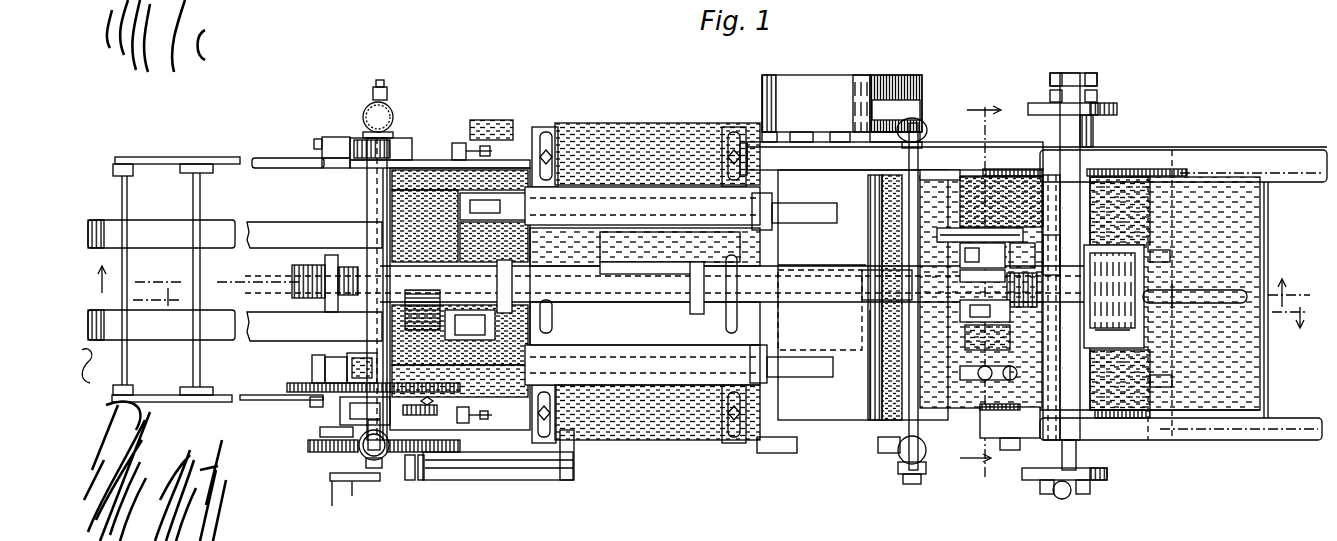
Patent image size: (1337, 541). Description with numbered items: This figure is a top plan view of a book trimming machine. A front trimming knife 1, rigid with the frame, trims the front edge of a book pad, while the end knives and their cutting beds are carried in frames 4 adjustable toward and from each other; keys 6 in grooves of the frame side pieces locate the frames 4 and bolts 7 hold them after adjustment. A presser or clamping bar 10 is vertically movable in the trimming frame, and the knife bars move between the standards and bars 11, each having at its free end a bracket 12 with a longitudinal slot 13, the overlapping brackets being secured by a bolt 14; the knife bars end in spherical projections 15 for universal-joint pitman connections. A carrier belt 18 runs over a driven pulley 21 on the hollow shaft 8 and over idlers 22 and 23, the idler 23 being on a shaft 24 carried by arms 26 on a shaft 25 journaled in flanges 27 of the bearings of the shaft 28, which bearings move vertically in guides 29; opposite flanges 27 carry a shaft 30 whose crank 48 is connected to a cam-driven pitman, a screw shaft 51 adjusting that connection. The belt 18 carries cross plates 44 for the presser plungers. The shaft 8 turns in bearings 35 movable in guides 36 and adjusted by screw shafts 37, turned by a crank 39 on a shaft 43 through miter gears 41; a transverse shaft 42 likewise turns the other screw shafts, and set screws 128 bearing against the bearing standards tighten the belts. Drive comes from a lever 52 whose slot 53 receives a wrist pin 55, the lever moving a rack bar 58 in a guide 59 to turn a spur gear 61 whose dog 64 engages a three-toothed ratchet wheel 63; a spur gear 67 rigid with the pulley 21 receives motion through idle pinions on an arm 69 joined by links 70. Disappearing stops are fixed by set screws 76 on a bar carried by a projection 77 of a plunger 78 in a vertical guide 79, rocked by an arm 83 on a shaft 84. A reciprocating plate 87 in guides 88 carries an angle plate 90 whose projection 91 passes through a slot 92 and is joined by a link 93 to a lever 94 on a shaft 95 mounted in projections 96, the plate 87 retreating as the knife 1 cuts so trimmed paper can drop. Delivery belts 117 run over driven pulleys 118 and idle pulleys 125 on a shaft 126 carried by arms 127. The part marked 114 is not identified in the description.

The trimming knife 1 is at (1070, 397).
The frames 4 is at (671, 190).
The keys 6 is at (724, 308).
The bolts 7 is at (735, 111).
The shaft 8 is at (367, 197).
The presser or clamping bar 10 is at (886, 82).
The bars 11 is at (922, 115).
The bracket 12 is at (640, 266).
The longitudinal slot 13 is at (545, 256).
The bolt 14 is at (645, 303).
The projections 15 is at (760, 194).
The belt 18 is at (863, 295).
The driven pulley 21 is at (651, 283).
The idler 22 is at (1028, 290).
The idler 23 is at (1058, 307).
The shaft 24 is at (1041, 244).
The shaft 25 is at (1001, 202).
The arms 26 is at (981, 224).
The flanges 27 is at (1005, 112).
The shaft 28 is at (820, 310).
The guides 29 is at (873, 160).
The shaft 30 is at (822, 256).
The bearings 35 is at (348, 166).
The guides 36 is at (398, 146).
The vertical screw shafts 37 is at (320, 144).
The crank 39 is at (355, 489).
The miter gears 41 is at (390, 108).
The shaft 42 is at (886, 453).
The shaft 43 is at (362, 114).
The cross plates 44 is at (630, 328).
The crank 48 is at (1000, 402).
The crank-operated screw shaft 51 is at (1010, 438).
The lever 52 is at (520, 470).
The longitudinal slot 53 is at (575, 472).
The wrist pin 55 is at (500, 462).
The rack bar 58 is at (460, 480).
The guide 59 is at (316, 453).
The spur gear 61 is at (421, 480).
The ratchet wheel 63 is at (407, 480).
The dog 64 is at (326, 428).
The spur gear 67 is at (298, 384).
The arm 69 is at (340, 357).
The links 70 is at (318, 355).
The set screw 76 is at (972, 268).
The projection 77 is at (975, 306).
The vertically reciprocating plunger 78 is at (986, 320).
The vertical guide 79 is at (983, 283).
The rocking arm 83 is at (885, 365).
The shaft 84 is at (870, 288).
The reciprocating plate 87 is at (1270, 238).
The guides 88 is at (1037, 177).
The angle plate 90 is at (1150, 257).
The projection 91 is at (1174, 286).
The longitudinal slot 92 is at (1222, 290).
The link 93 is at (1114, 296).
The lever 94 is at (1112, 340).
The shaft 95 is at (1172, 384).
The projections 96 is at (1181, 426).
The housing 114 is at (460, 299).
The belts 117 is at (235, 280).
The driven pulleys 118 is at (460, 328).
The idle pulleys 125 is at (110, 231).
The shaft 126 is at (158, 271).
The arms 127 is at (177, 157).
The set screws 128 is at (459, 143).